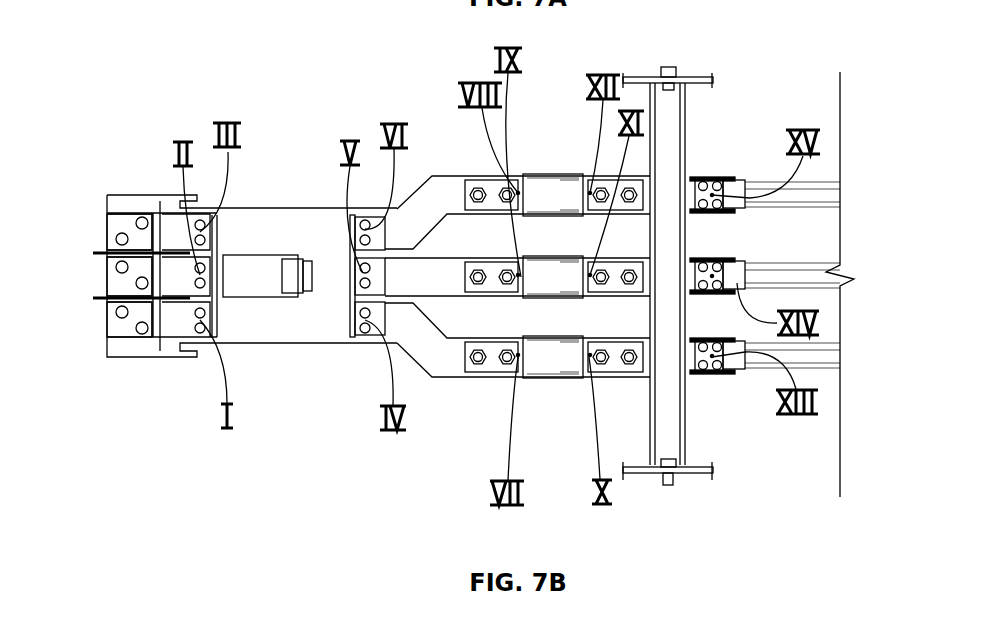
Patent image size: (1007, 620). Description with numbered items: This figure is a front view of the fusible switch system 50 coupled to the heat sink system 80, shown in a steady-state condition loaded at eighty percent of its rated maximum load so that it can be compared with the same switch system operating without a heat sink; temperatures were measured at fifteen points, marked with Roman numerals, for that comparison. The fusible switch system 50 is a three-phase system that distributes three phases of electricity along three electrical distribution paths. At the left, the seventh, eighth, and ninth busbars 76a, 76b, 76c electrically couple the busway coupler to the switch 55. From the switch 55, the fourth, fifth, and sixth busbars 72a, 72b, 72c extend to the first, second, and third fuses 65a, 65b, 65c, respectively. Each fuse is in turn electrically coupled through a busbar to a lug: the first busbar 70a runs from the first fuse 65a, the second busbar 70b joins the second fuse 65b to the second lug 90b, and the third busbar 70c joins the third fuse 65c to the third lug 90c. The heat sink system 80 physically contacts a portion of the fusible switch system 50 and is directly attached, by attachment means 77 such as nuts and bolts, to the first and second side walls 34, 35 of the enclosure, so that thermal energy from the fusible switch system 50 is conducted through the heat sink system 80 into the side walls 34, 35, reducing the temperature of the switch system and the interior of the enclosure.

The fusible switch system 50 is at (285, 63).
The switch 55 is at (260, 220).
The seventh busbar 76a is at (125, 330).
The eighth busbar 76b is at (113, 280).
The ninth busbar 76c is at (125, 222).
The fourth busbar 72a is at (438, 367).
The fifth busbar 72b is at (445, 277).
The sixth busbar 72c is at (430, 193).
The first fuse 65a is at (536, 363).
The second fuse 65b is at (567, 270).
The third fuse 65c is at (538, 193).
The first busbar 70a is at (647, 367).
The second busbar 70b is at (647, 280).
The third busbar 70c is at (688, 182).
The second lug 90b is at (737, 277).
The third lug 90c is at (740, 188).
The heat sink system 80 is at (700, 422).
The attachment means 77 is at (663, 72).
The second side wall 35 is at (703, 80).
The first side wall 34 is at (702, 472).